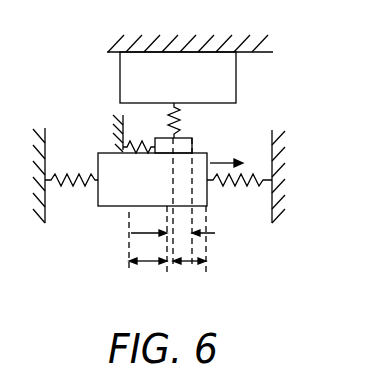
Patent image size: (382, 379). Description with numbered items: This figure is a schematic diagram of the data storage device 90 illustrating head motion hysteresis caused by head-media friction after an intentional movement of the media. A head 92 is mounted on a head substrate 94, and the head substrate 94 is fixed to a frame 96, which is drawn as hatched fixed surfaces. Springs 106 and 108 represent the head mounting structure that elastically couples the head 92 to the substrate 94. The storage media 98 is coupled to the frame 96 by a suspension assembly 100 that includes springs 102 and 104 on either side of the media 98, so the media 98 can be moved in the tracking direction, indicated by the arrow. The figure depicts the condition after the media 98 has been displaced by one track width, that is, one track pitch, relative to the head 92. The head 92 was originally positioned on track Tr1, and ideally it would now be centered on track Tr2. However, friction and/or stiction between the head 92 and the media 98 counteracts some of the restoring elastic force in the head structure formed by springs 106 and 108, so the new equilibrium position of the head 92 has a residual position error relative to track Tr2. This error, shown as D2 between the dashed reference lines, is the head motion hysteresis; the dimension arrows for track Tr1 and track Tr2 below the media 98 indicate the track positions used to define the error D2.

The data storage device 90 is at (277, 72).
The head substrate 94 is at (190, 92).
The spring 108 is at (180, 123).
The suspension assembly 100 is at (268, 126).
The head 92 is at (193, 143).
The storage media 98 is at (149, 193).
The spring 106 is at (137, 140).
The spring 102 is at (77, 183).
The frame 96 is at (281, 184).
The spring 104 is at (243, 186).
The residual position error D2 is at (179, 238).
The track Tr1 is at (148, 268).
The track Tr2 is at (183, 267).